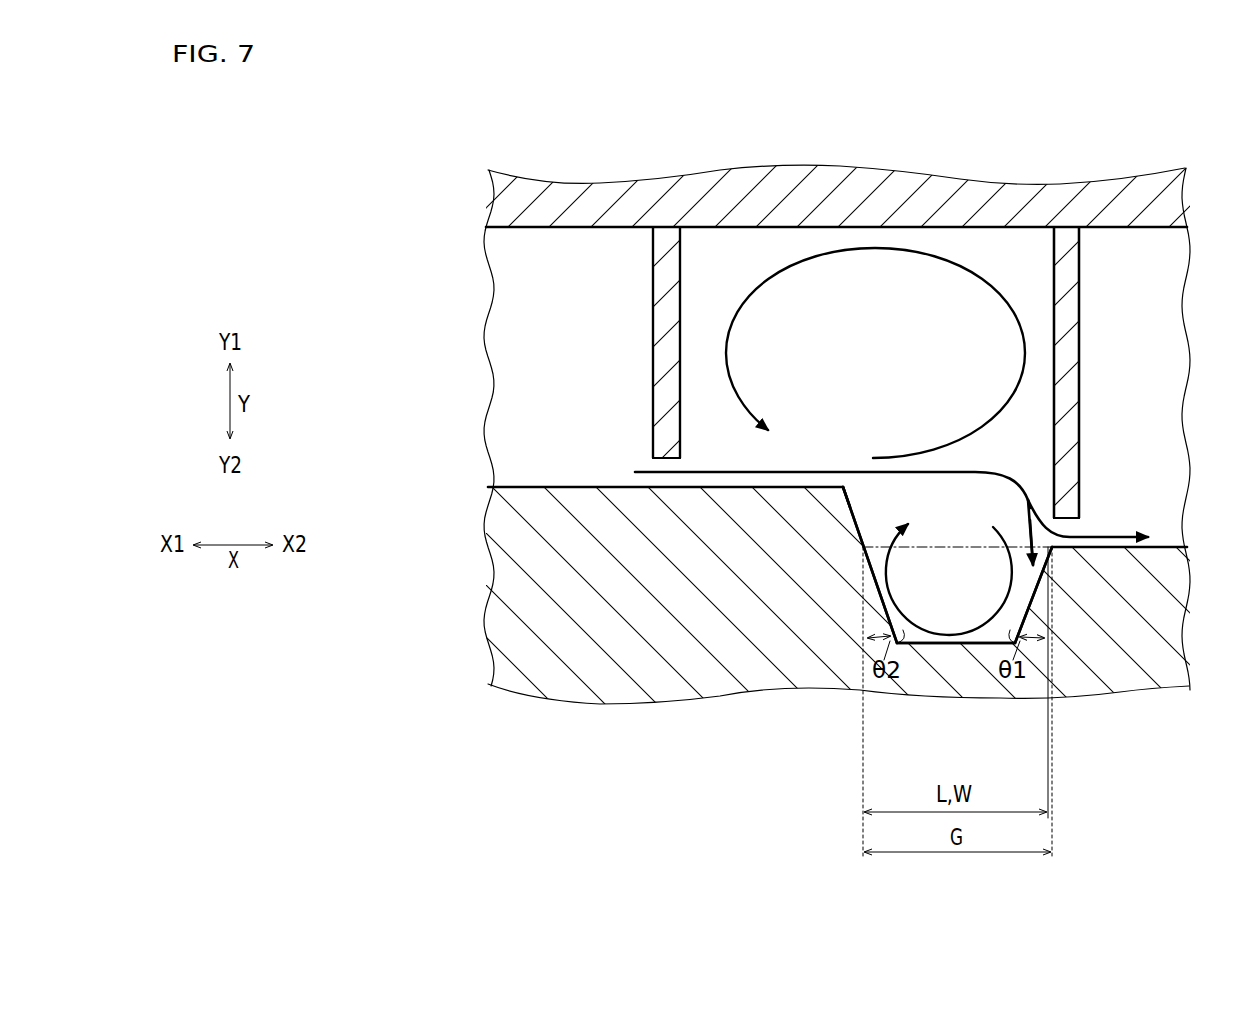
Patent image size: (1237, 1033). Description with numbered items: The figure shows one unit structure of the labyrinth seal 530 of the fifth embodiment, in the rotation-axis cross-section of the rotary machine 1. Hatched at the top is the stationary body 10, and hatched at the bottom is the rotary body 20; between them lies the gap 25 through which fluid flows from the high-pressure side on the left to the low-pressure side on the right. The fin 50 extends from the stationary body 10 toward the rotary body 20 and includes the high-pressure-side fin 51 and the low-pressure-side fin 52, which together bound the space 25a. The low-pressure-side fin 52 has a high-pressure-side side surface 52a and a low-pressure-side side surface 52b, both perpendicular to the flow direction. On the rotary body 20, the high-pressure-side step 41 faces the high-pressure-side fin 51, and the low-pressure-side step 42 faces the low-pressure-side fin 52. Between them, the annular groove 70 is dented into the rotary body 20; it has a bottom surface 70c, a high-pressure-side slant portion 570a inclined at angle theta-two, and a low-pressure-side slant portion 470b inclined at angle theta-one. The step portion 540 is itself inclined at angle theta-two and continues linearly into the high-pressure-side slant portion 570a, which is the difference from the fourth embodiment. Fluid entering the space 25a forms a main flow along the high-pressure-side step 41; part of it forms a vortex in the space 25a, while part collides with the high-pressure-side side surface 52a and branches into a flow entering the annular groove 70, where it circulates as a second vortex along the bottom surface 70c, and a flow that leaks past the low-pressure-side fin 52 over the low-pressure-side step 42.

The rotary machine 1 is at (388, 160).
The stationary body 10 is at (528, 178).
The rotary body 20 is at (568, 690).
The gap 25 is at (522, 294).
The space 25a is at (907, 238).
The high-pressure-side step 41 is at (774, 486).
The low-pressure-side step 42 is at (1162, 610).
The fin 50 is at (866, 302).
The high-pressure-side fin 51 is at (666, 236).
The low-pressure-side fin 52 is at (1070, 240).
The high-pressure-side side surface 52a is at (1050, 262).
The low-pressure-side side surface 52b is at (1095, 262).
The annular groove 70 is at (955, 536).
The bottom surface 70c is at (953, 642).
The low-pressure-side slant portion 470b is at (1002, 652).
The high-pressure-side slant portion 570a is at (900, 652).
The labyrinth seal 530 is at (522, 378).
The step portion 540 is at (860, 510).